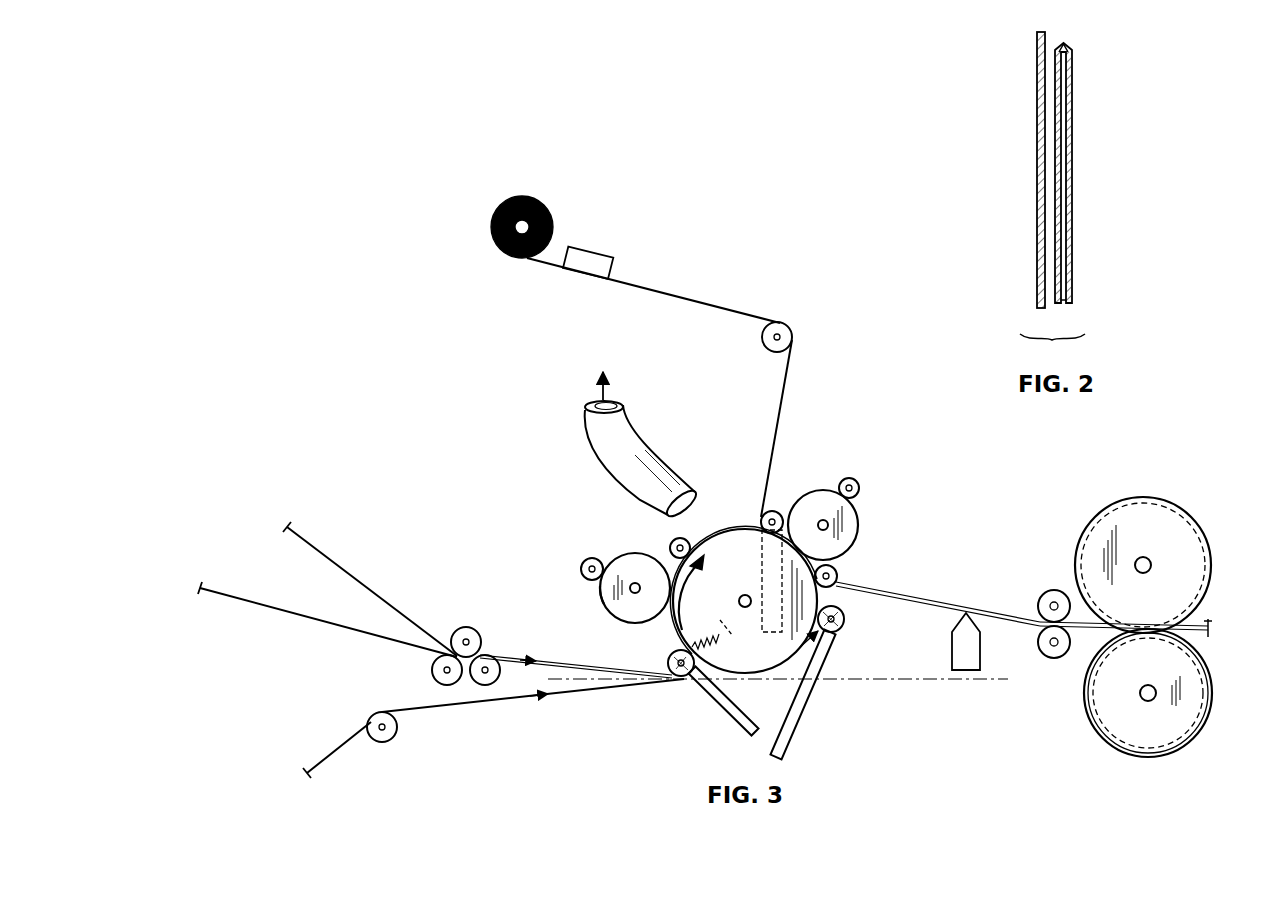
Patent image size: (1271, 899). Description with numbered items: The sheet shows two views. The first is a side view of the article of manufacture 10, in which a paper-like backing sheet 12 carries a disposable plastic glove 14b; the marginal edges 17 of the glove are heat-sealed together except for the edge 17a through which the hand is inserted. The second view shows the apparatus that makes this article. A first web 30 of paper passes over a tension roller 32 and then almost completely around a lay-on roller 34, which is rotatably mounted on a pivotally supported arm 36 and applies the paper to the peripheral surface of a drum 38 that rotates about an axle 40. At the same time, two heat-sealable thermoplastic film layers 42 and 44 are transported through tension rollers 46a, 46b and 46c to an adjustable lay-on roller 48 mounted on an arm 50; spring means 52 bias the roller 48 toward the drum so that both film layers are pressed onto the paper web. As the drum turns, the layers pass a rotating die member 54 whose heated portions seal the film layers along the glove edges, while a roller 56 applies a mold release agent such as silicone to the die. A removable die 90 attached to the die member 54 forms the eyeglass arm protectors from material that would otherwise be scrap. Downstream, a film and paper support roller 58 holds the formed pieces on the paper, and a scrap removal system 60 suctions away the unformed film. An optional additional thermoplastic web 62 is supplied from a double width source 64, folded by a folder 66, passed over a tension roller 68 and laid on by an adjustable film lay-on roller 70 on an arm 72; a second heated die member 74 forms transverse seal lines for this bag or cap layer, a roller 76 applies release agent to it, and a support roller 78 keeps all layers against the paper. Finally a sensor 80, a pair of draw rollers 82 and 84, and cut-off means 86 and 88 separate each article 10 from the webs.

In FIG. 2, the article of manufacture 10 is at (1122, 54).
In FIG. 3, the article of manufacture 10 is at (1203, 622).
In FIG. 2, the backing sheet 12 is at (1038, 110).
In FIG. 2, the disposable plastic glove 14b is at (1073, 108).
In FIG. 2, the marginal edges 17 is at (1066, 46).
In FIG. 2, the edge 17a is at (1066, 303).
In FIG. 3, the first web 30 is at (336, 741).
In FIG. 3, the tension roller 32 is at (390, 742).
In FIG. 3, the lay-on roller 34 is at (845, 619).
In FIG. 3, the pivotally supported arm 36 is at (824, 666).
In FIG. 3, the drum 38 is at (733, 537).
In FIG. 3, the axle 40 is at (741, 597).
In FIG. 3, the thermoplastic film layer 42 is at (267, 608).
In FIG. 3, the thermoplastic film layer 44 is at (337, 562).
In FIG. 3, the tension roller 46a is at (432, 668).
In FIG. 3, the tension roller 46b is at (464, 628).
In FIG. 3, the tension roller 46c is at (502, 658).
In FIG. 3, the adjustable lay-on roller 48 is at (668, 661).
In FIG. 3, the arm 50 is at (725, 712).
In FIG. 3, the spring means 52 is at (690, 641).
In FIG. 3, the die member 54 is at (623, 572).
In FIG. 3, the roller 56 is at (581, 566).
In FIG. 3, the film and paper support roller 58 is at (672, 542).
In FIG. 3, the scrap removal system 60 is at (590, 440).
In FIG. 3, the heat-sealable thermoplastic material web 62 is at (705, 308).
In FIG. 3, the double width source 64 is at (500, 220).
In FIG. 3, the folder 66 is at (594, 247).
In FIG. 3, the tension roller 68 is at (772, 351).
In FIG. 3, the adjustable film lay-on roller 70 is at (777, 511).
In FIG. 3, the arm 72 is at (764, 557).
In FIG. 3, the die member 74 is at (816, 498).
In FIG. 3, the roller 76 is at (852, 479).
In FIG. 3, the support roller 78 is at (838, 576).
In FIG. 3, the sensor 80 is at (964, 672).
In FIG. 3, the draw roller 82 is at (1050, 590).
In FIG. 3, the draw roller 84 is at (1048, 660).
In FIG. 3, the cut-off means 86 is at (1158, 507).
In FIG. 3, the cut-off means 88 is at (1155, 745).
In FIG. 3, the removable die 90 is at (600, 602).